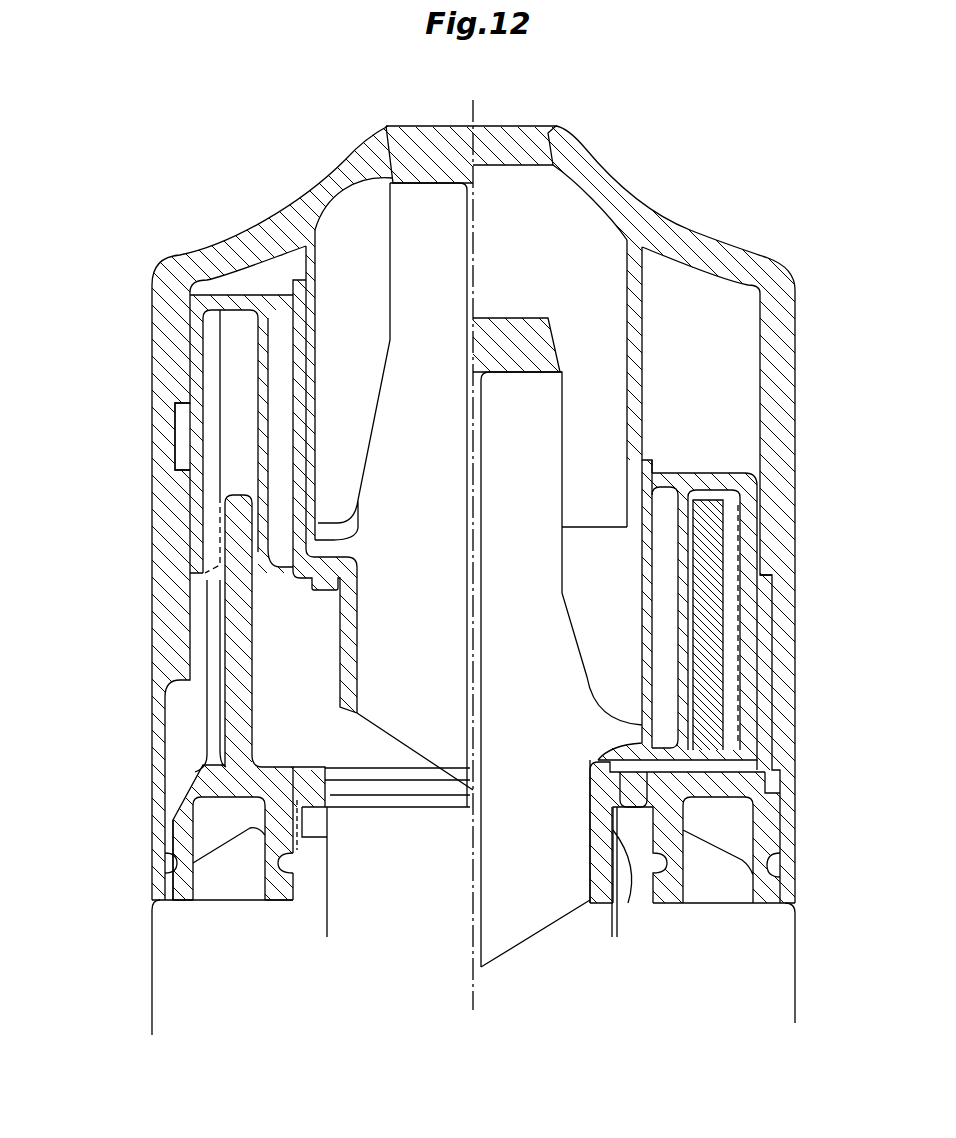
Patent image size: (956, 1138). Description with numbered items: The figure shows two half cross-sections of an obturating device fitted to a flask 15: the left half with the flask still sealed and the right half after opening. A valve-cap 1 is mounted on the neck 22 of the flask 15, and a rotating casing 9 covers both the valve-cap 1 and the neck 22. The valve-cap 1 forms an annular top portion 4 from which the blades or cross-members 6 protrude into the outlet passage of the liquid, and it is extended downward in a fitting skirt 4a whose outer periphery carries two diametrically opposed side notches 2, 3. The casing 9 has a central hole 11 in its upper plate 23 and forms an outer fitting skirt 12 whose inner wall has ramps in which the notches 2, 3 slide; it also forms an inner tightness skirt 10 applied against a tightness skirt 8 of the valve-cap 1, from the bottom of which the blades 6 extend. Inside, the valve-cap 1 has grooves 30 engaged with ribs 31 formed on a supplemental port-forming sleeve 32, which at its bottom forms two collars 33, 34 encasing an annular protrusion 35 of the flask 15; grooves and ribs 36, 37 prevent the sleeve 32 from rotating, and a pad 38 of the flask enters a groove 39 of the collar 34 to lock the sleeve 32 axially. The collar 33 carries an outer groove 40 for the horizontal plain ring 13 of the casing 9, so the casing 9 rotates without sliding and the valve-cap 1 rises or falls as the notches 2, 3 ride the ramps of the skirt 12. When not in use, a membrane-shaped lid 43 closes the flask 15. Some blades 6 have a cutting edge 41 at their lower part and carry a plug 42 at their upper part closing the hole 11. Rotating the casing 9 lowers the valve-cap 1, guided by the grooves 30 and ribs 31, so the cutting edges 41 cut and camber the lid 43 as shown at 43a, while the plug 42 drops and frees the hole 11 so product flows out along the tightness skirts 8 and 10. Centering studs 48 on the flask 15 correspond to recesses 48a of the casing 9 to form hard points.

The valve-cap 1 is at (232, 345).
The side notch 2 is at (176, 440).
The side notch 3 is at (764, 597).
The annular top portion 4 is at (690, 483).
The fitting skirt 4a is at (193, 507).
The blades or cross-members 6 is at (390, 425).
The tightness skirt 8 is at (301, 396).
The casing 9 is at (797, 372).
The inner tightness skirt 10 is at (313, 362).
The central hole 11 is at (521, 147).
The outer fitting skirt 12 is at (160, 727).
The horizontal plain ring 13 is at (168, 862).
The flask 15 is at (160, 957).
The neck 22 is at (630, 853).
The upper plate 23 is at (697, 232).
The grooves 30 is at (210, 375).
The ribs 31 is at (217, 628).
The sleeve 32 is at (243, 670).
The collar 33 is at (178, 832).
The collar 34 is at (278, 838).
The annular protrusion 35 is at (224, 893).
The grooves and ribs 36 is at (290, 772).
The grooves and ribs 37 is at (303, 830).
The pad 38 is at (290, 864).
The groove 39 is at (271, 903).
The groove 40 is at (180, 905).
The cutting edge 41 is at (373, 727).
The plug 42 is at (434, 170).
The lid 43 is at (431, 806).
The cambered lid 43a is at (613, 870).
The centering stud 48 is at (757, 788).
The recess 48a is at (771, 778).